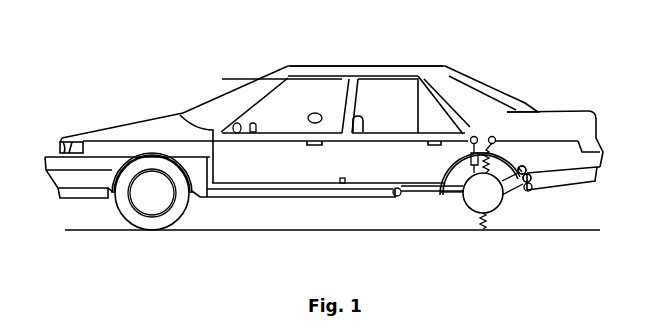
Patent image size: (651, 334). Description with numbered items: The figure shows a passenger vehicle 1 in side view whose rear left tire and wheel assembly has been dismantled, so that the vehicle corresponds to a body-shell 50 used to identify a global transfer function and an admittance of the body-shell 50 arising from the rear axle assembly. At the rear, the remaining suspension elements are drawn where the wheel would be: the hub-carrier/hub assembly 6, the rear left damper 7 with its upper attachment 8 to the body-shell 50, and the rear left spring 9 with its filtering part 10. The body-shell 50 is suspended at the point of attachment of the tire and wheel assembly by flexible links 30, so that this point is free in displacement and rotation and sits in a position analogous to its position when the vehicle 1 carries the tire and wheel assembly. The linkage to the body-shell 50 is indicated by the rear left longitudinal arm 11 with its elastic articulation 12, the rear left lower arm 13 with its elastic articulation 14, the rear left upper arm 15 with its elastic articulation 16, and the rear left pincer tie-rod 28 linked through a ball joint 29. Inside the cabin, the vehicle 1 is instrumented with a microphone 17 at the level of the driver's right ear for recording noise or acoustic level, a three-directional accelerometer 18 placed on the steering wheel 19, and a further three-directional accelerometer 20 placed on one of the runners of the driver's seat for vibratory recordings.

The passenger vehicle 1 is at (102, 130).
The hub-carrier/hub assembly 6 is at (475, 205).
The rear left damper 7 is at (465, 147).
The upper attachment 8 is at (470, 138).
The rear left spring 9 is at (473, 136).
The filtering part 10 is at (492, 136).
The rear left longitudinal arm 11 is at (430, 191).
The elastic articulation 12 is at (394, 196).
The rear left lower arm 13 is at (503, 199).
The elastic articulation 14 is at (531, 190).
The rear left upper arm 15 is at (522, 166).
The elastic articulation 16 is at (525, 168).
The microphone 17 is at (312, 113).
The three-directional accelerometer 18 is at (253, 133).
The steering wheel 19 is at (238, 122).
The three-directional accelerometer 20 is at (343, 184).
The rear left pincer tie-rod 28 is at (529, 175).
The ball joint 29 is at (531, 179).
The flexible links 30 is at (487, 229).
The body-shell 50 is at (295, 66).